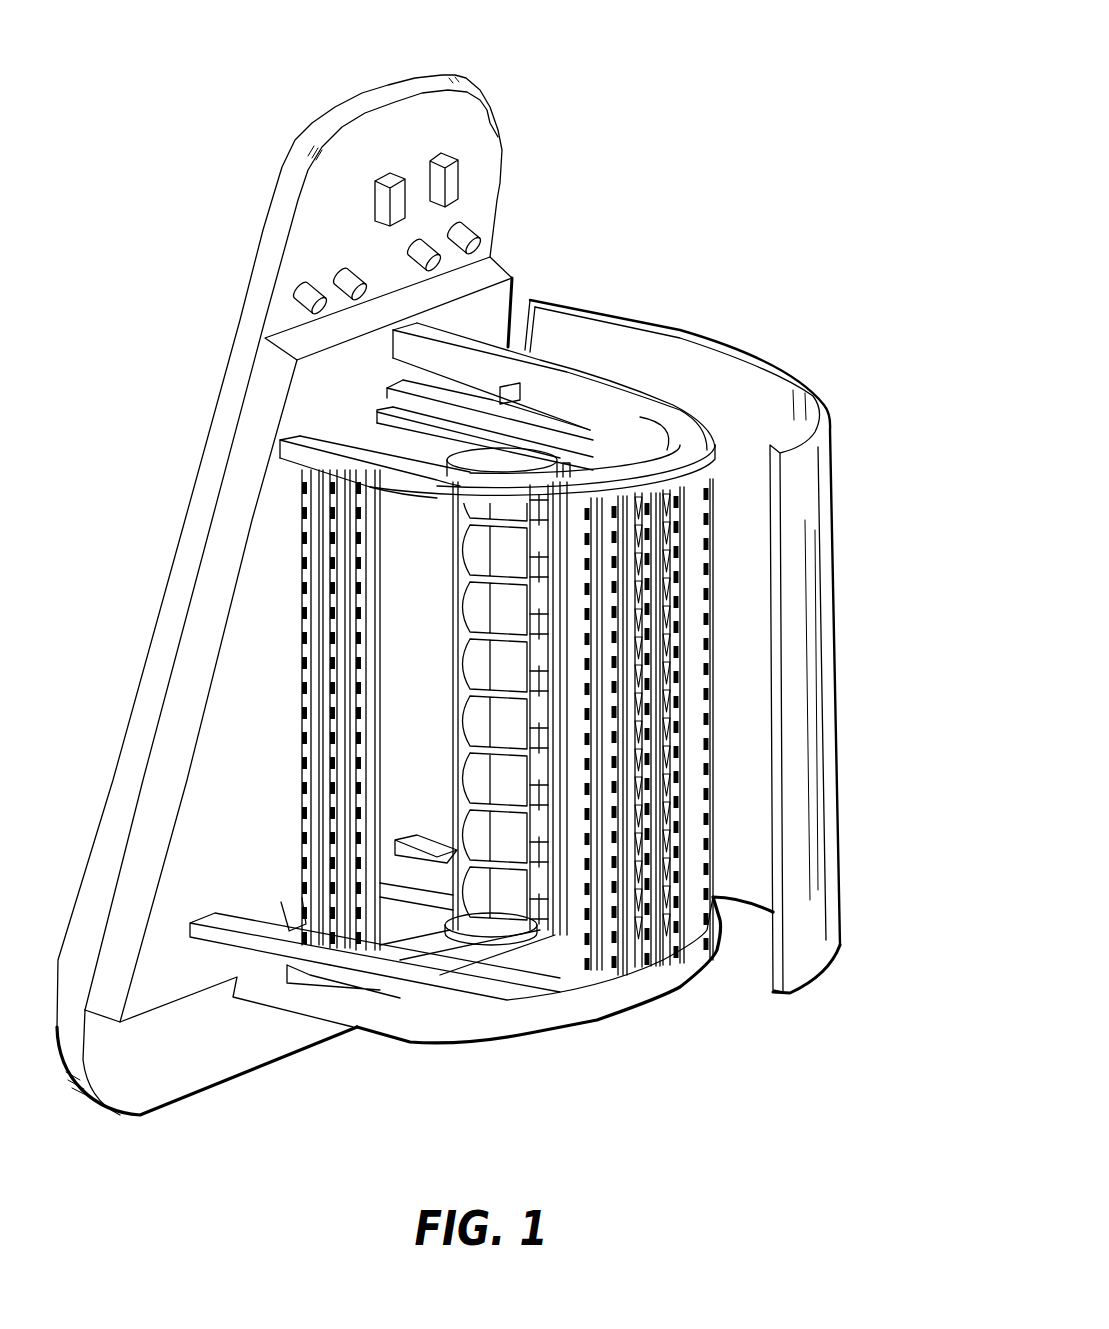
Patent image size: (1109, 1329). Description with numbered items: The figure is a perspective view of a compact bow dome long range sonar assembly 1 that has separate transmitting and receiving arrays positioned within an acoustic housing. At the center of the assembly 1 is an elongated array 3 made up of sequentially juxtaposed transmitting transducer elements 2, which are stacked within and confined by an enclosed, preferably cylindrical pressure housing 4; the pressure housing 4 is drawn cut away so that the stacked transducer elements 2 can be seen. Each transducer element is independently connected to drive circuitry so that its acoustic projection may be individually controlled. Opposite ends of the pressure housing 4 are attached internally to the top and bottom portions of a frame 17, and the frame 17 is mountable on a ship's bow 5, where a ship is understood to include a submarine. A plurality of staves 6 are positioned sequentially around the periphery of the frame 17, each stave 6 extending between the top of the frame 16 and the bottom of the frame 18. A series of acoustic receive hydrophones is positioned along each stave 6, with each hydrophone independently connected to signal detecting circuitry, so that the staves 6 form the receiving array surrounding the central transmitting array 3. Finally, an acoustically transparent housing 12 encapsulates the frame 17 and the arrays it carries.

The bow dome sonar assembly 1 is at (620, 105).
The transmitting transducer elements 2 is at (495, 908).
The elongated array 3 is at (527, 838).
The pressure housing 4 is at (467, 937).
The ship's bow 5 is at (270, 232).
The staves 6 is at (670, 960).
The acoustically transparent housing 12 is at (820, 560).
The top of the frame 16 is at (533, 363).
The frame 17 is at (403, 1027).
The bottom of the frame 18 is at (357, 1030).